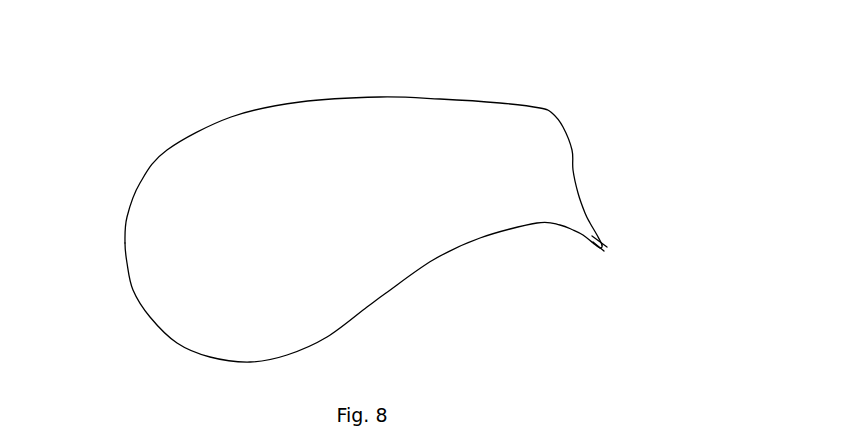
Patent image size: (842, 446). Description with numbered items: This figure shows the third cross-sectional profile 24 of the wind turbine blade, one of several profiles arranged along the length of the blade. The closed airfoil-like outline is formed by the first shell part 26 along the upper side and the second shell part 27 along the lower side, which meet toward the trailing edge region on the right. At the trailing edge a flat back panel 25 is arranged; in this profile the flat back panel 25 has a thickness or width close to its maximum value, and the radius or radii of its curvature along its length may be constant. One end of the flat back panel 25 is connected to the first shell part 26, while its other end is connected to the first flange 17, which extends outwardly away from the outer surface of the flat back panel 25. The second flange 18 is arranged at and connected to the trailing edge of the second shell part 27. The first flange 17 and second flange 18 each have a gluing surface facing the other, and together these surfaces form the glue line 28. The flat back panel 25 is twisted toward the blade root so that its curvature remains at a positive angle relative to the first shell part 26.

The third cross-sectional profile 24 is at (399, 192).
The flat back panel 25 is at (573, 170).
The first shell part 26 is at (231, 117).
The second shell part 27 is at (386, 293).
The first flange 17 is at (590, 215).
The second flange 18 is at (575, 230).
The glue line 28 is at (602, 245).